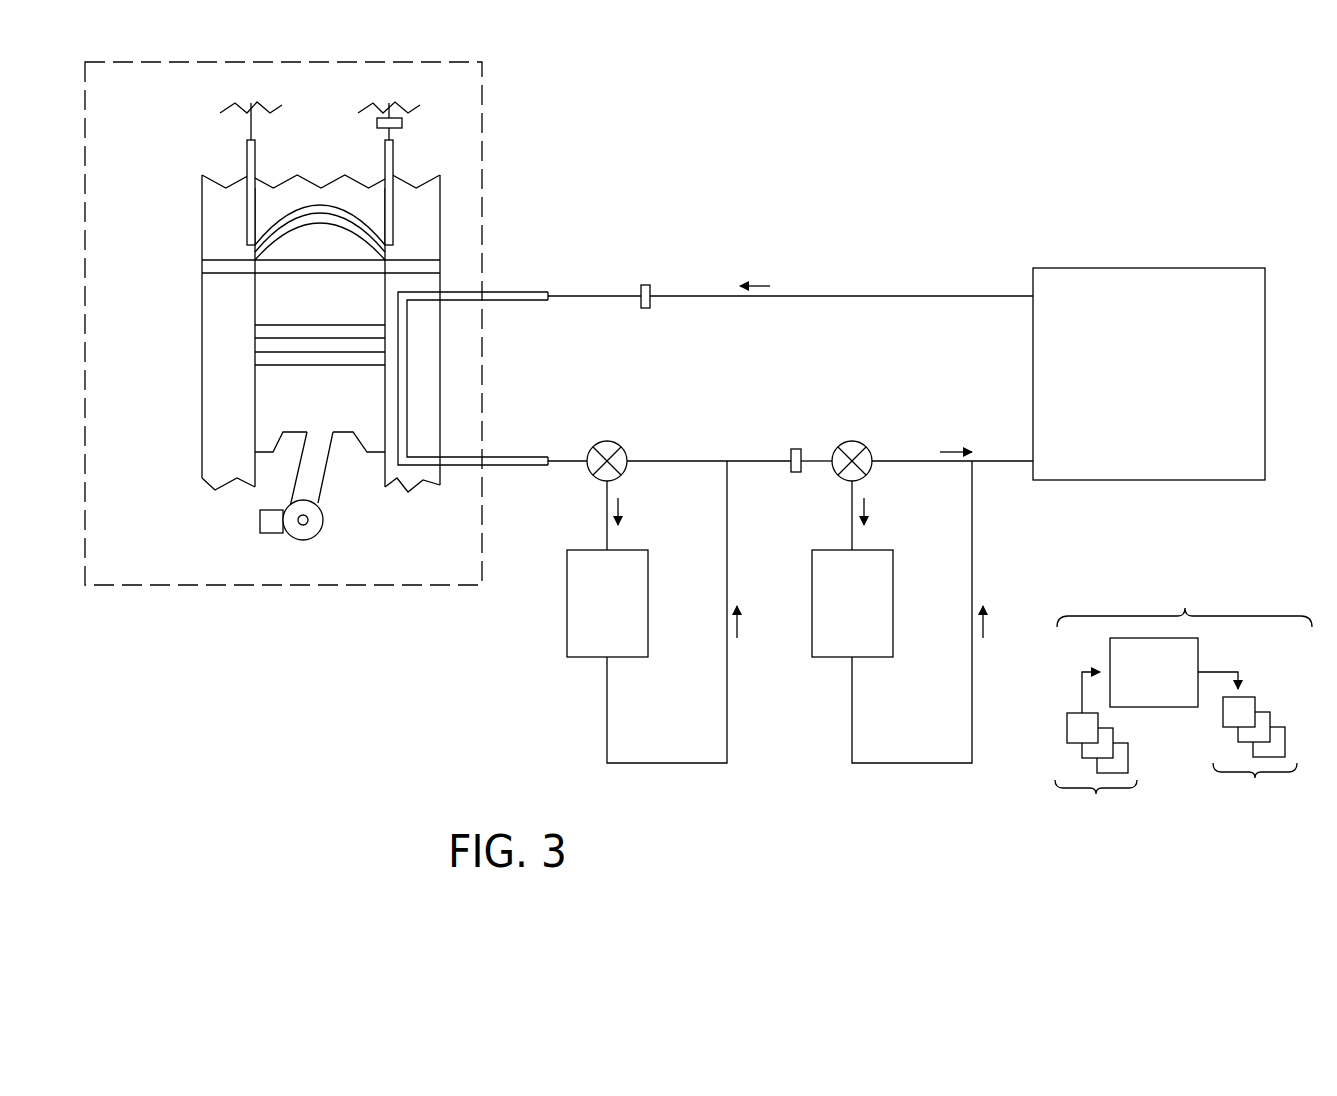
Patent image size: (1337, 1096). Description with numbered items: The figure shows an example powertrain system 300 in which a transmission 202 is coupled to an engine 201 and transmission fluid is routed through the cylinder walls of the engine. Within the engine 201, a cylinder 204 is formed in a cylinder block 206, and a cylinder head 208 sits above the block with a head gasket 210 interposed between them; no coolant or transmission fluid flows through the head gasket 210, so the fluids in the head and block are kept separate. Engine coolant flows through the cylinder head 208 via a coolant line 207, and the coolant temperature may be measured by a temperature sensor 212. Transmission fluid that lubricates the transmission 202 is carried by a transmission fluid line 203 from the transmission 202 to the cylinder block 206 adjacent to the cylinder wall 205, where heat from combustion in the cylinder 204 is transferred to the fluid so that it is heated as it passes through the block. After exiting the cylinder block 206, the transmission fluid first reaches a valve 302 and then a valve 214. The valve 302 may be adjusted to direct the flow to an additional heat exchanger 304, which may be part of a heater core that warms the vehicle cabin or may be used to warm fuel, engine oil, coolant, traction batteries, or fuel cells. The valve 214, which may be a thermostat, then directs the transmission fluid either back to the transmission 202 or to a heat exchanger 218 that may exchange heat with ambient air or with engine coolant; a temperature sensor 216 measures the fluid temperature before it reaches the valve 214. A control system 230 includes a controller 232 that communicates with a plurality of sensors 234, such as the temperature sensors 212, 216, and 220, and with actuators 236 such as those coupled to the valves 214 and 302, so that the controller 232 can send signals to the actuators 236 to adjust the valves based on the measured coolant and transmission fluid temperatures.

The engine 201 is at (482, 123).
The transmission 202 is at (1131, 397).
The transmission fluid line 203 is at (498, 292).
The cylinder 204 is at (281, 321).
The cylinder wall 205 is at (385, 378).
The cylinder block 206 is at (202, 340).
The coolant line 207 is at (255, 162).
The cylinder head 208 is at (202, 208).
The head gasket 210 is at (202, 263).
The temperature sensor 212 is at (402, 124).
The valve 214 is at (857, 442).
The temperature sensor 216 is at (797, 449).
The heat exchanger 218 is at (834, 618).
The temperature sensor 220 is at (645, 285).
The control system 230 is at (1183, 701).
The controller 232 is at (1136, 684).
The sensors 234 is at (1096, 756).
The actuators 236 is at (1255, 747).
The powertrain system 300 is at (917, 148).
The valve 302 is at (608, 441).
The heat exchanger 304 is at (589, 618).